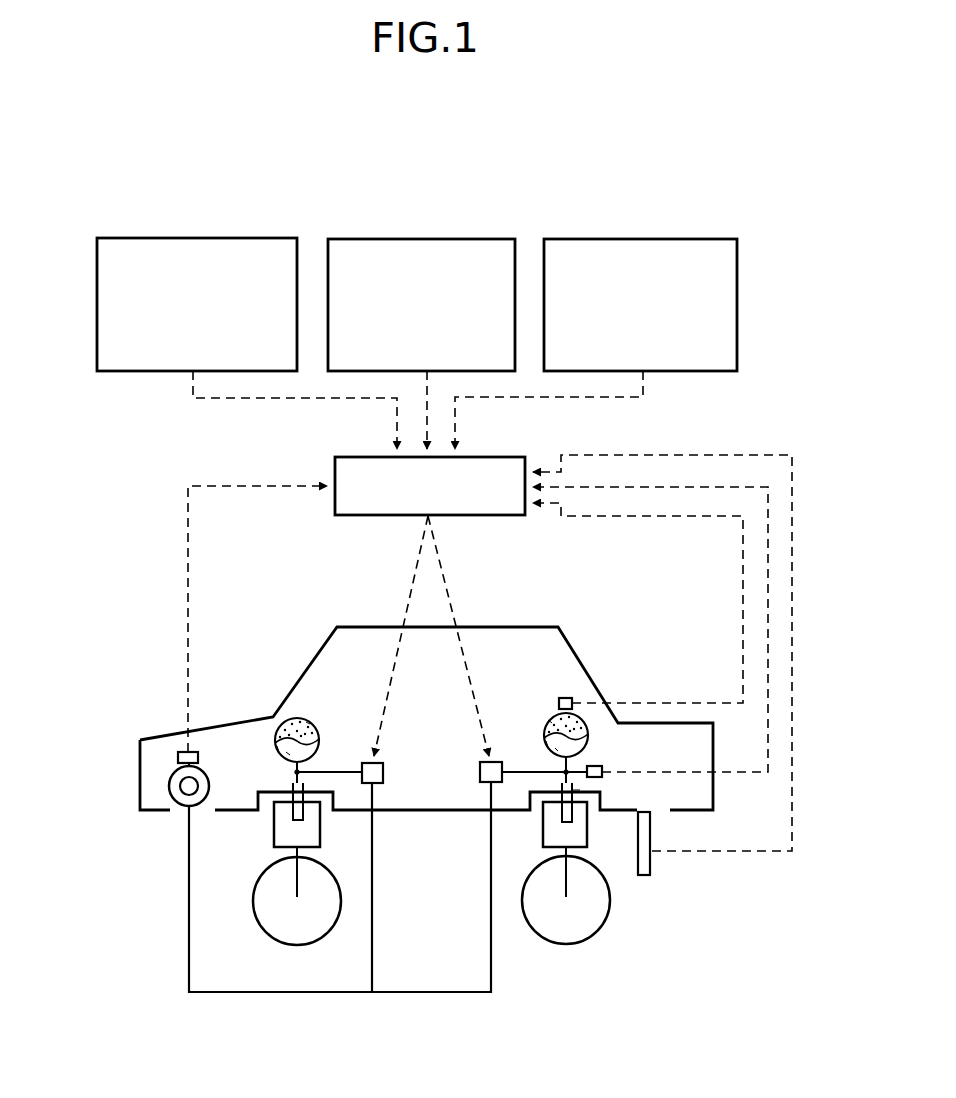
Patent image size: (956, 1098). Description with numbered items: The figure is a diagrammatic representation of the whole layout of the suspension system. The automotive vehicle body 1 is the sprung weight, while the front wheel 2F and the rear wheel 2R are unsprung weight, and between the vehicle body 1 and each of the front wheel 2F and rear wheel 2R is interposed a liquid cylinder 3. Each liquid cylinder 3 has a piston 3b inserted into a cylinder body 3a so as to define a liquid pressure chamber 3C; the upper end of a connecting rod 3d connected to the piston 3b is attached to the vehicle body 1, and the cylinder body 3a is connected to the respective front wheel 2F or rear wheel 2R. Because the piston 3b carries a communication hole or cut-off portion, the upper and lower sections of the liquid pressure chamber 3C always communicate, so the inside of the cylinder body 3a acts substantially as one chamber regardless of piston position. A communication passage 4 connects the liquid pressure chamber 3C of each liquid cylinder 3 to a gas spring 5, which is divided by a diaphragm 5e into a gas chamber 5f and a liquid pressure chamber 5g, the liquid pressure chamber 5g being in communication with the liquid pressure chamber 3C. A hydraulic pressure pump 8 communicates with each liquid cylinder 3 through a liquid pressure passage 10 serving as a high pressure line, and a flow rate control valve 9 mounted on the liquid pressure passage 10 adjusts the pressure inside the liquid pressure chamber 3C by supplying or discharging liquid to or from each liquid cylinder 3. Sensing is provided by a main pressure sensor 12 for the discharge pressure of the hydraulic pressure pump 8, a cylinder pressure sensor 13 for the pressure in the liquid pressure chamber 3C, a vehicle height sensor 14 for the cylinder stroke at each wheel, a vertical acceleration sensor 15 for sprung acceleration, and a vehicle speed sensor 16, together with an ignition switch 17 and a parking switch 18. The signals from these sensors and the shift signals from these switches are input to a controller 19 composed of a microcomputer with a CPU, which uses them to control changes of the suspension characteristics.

The automotive vehicle body 1 is at (512, 623).
The front wheel 2F is at (326, 930).
The rear wheel 2R is at (601, 918).
The liquid cylinder 3 is at (270, 849).
The cylinder body 3a is at (316, 810).
The piston 3b is at (320, 832).
The liquid pressure chamber 3C is at (304, 840).
The connecting rod 3d is at (283, 805).
The communication passage 4 is at (305, 767).
The gas spring 5 is at (286, 716).
The diaphragm 5e is at (283, 750).
The gas chamber 5f is at (309, 722).
The liquid pressure chamber 5g is at (287, 753).
The hydraulic pressure pump 8 is at (169, 786).
The flow rate control valve 9 is at (480, 767).
The liquid pressure passage 10 is at (330, 993).
The main pressure sensor 12 is at (181, 752).
The cylinder pressure sensor 13 is at (602, 766).
The vehicle height sensor 14 is at (650, 832).
The vertical acceleration sensor 15 is at (562, 698).
The vehicle speed sensor 16 is at (197, 237).
The ignition switch 17 is at (417, 238).
The parking switch 18 is at (634, 238).
The controller 19 is at (355, 457).